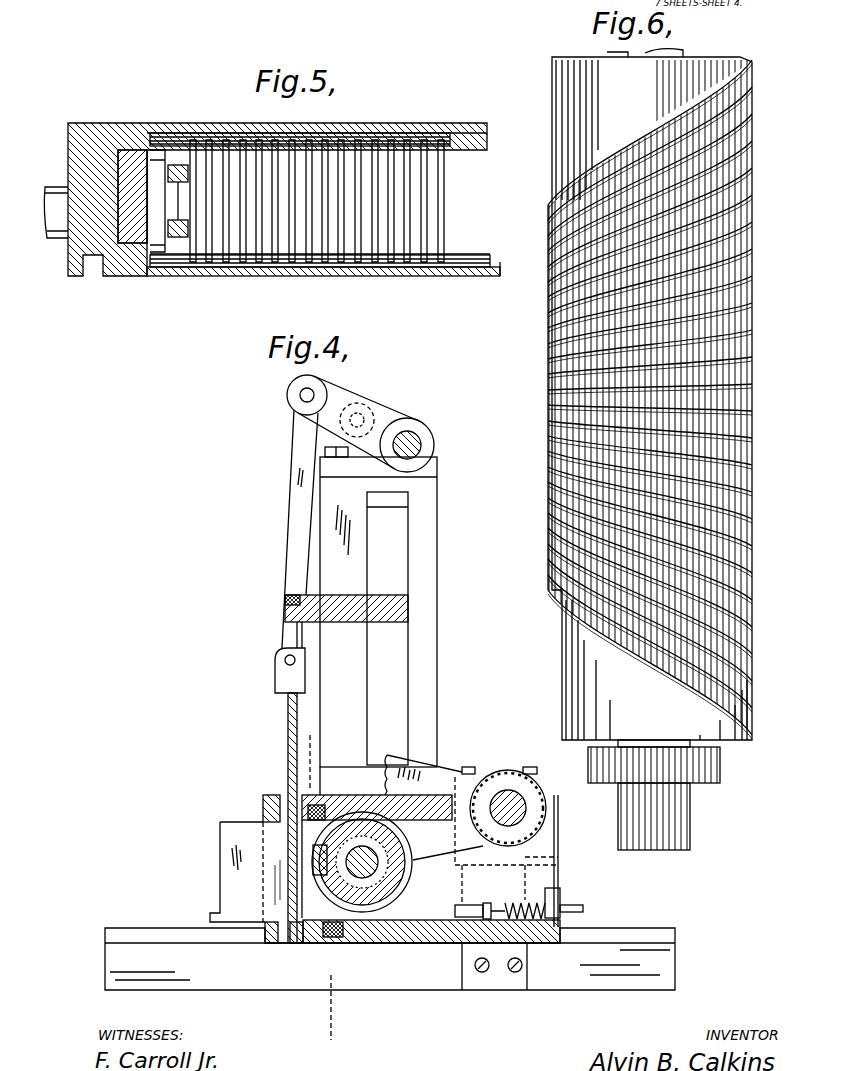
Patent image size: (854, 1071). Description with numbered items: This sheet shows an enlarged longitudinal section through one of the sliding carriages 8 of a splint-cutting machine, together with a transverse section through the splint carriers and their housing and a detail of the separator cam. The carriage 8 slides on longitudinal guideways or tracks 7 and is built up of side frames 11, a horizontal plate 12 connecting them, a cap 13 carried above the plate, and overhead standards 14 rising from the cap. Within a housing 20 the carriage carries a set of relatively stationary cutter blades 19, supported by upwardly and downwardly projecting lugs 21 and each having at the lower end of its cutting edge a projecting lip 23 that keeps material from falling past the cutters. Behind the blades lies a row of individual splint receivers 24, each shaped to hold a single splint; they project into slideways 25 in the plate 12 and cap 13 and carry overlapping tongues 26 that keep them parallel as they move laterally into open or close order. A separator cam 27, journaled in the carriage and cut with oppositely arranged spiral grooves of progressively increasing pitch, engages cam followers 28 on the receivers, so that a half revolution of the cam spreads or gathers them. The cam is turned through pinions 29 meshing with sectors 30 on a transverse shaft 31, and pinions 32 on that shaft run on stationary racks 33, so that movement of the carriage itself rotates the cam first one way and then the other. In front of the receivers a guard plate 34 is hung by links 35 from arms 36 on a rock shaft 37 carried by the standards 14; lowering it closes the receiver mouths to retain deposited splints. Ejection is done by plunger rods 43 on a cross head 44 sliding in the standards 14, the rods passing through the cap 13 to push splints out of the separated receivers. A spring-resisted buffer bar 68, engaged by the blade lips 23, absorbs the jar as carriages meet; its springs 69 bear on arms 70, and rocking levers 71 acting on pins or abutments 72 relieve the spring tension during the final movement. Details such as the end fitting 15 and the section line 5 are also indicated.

In FIG. 4, the axis line 5 is at (323, 888).
In FIG. 4, the longitudinal guideways or tracks 7 is at (390, 952).
In FIG. 4, the carriage 8 is at (221, 788).
In FIG. 5, the side frames 11 is at (83, 195).
In FIG. 5, the horizontal plate 12 is at (425, 268).
In FIG. 4, the horizontal plate 12 is at (440, 937).
In FIG. 5, the cap 13 is at (122, 135).
In FIG. 4, the cap 13 is at (343, 800).
In FIG. 4, the overhead standards 14 is at (425, 650).
In FIG. 5, the end fitting 15 is at (52, 187).
In FIG. 4, the cutter blades 19 is at (237, 872).
In FIG. 4, the housing 20 is at (262, 958).
In FIG. 4, the lugs 21 is at (262, 808).
In FIG. 4, the projecting lip 23 is at (213, 917).
In FIG. 5, the splint receivers 24 is at (400, 210).
In FIG. 4, the splint receivers 24 is at (300, 883).
In FIG. 5, the slideways 25 is at (480, 147).
In FIG. 4, the slideways 25 is at (316, 805).
In FIG. 5, the overlapping tongues 26 is at (462, 135).
In FIG. 4, the overlapping tongues 26 is at (316, 810).
In FIG. 6, the separator cam 27 is at (650, 394).
In FIG. 4, the separator cam 27 is at (400, 873).
In FIG. 4, the cam followers 28 is at (318, 862).
In FIG. 6, the pinions 29 is at (720, 763).
In FIG. 4, the sectors 30 is at (440, 780).
In FIG. 4, the transverse shaft 31 is at (505, 800).
In FIG. 4, the pinions 32 is at (548, 820).
In FIG. 4, the stationary racks 33 is at (522, 852).
In FIG. 4, the guard plate 34 is at (285, 712).
In FIG. 4, the links 35 is at (295, 539).
In FIG. 4, the arms 36 is at (346, 396).
In FIG. 4, the rock shaft 37 is at (421, 446).
In FIG. 4, the plunger rods 43 is at (300, 670).
In FIG. 4, the cross head 44 is at (400, 608).
In FIG. 4, the buffer bar 68 is at (315, 950).
In FIG. 4, the springs 69 is at (553, 920).
In FIG. 4, the arms 70 is at (420, 950).
In FIG. 4, the rocking levers 71 is at (467, 943).
In FIG. 4, the pins or abutments 72 is at (488, 905).